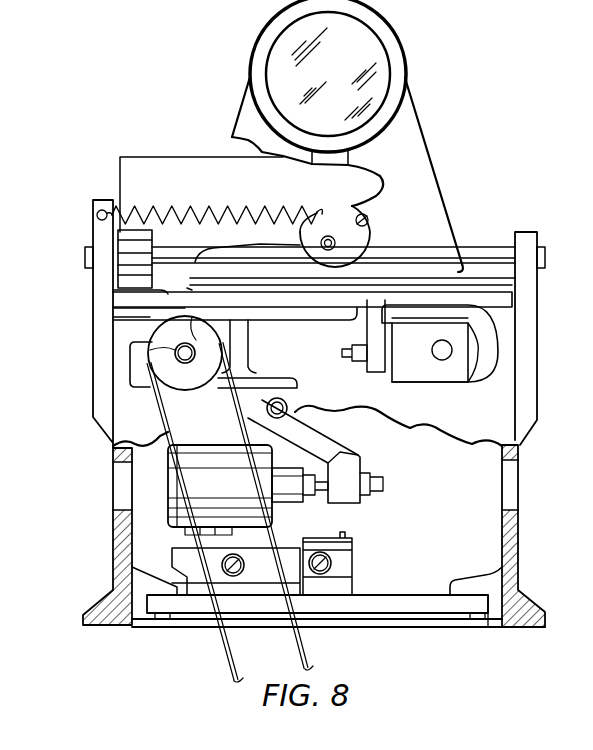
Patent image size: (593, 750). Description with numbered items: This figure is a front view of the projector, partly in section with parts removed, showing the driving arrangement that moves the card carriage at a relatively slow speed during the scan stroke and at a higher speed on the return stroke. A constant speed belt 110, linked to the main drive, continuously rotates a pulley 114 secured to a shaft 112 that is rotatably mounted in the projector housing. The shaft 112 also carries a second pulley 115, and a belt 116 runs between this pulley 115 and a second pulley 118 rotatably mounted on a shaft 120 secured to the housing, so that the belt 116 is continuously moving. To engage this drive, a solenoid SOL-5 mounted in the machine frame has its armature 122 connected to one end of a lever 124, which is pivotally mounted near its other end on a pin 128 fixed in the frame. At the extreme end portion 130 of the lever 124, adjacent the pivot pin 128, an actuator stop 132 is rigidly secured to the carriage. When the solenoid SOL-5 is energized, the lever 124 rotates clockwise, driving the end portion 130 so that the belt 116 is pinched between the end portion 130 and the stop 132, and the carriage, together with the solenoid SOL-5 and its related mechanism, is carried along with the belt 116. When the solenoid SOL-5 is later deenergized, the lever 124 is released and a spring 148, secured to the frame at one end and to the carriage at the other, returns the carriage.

The constant speed belt 110 is at (305, 636).
The shaft 112 is at (155, 340).
The pulley 114 is at (147, 390).
The second pulley 115 is at (192, 322).
The belt 116 is at (282, 318).
The second pulley 118 is at (480, 340).
The shaft 120 is at (442, 360).
The armature 122 is at (293, 504).
The lever 124 is at (353, 448).
The pin 128 is at (288, 410).
The end portion 130 is at (270, 380).
The actuator stop 132 is at (252, 368).
The spring 148 is at (234, 206).
The solenoid SOL-5 is at (160, 482).